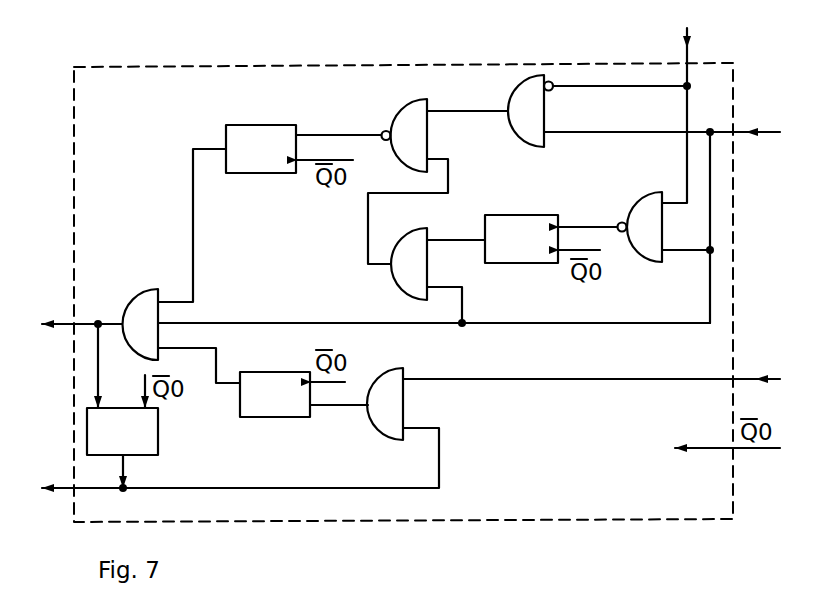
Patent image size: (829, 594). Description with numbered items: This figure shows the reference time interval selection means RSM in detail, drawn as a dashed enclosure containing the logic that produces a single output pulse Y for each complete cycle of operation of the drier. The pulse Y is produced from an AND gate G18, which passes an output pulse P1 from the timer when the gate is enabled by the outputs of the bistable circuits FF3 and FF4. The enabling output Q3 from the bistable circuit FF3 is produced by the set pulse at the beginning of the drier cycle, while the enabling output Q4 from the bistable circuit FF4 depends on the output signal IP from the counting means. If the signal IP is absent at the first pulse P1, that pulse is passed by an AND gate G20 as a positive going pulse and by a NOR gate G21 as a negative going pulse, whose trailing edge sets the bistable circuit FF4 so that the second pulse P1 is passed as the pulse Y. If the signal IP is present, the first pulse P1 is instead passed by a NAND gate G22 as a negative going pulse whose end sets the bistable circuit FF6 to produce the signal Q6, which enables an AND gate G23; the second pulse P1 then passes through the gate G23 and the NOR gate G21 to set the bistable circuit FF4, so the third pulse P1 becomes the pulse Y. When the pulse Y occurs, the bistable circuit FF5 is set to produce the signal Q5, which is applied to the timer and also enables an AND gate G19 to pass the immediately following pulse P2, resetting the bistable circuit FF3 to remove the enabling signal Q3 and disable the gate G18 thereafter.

The reference time interval selection means RSM is at (175, 67).
The bistable circuit FF3 is at (275, 394).
The bistable circuit FF4 is at (261, 149).
The bistable circuit FF5 is at (122, 431).
The bistable circuit FF6 is at (521, 239).
The AND gate G18 is at (138, 309).
The AND gate G19 is at (367, 411).
The AND gate G20 is at (507, 109).
The NOR gate G21 is at (387, 132).
The NAND gate G22 is at (622, 220).
The AND gate G23 is at (387, 273).
The enabling output Q3 is at (199, 352).
The enabling output Q4 is at (193, 235).
The output signal Q5 is at (462, 455).
The signal Q6 is at (456, 226).
The output signal IP is at (691, 115).
The output pulse P1 is at (662, 212).
The pulse P2 is at (591, 366).
The output pulse Y is at (81, 312).